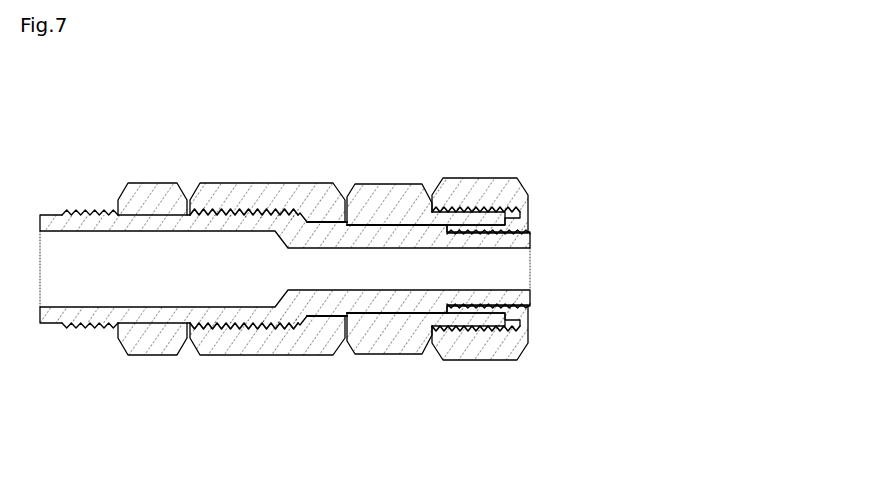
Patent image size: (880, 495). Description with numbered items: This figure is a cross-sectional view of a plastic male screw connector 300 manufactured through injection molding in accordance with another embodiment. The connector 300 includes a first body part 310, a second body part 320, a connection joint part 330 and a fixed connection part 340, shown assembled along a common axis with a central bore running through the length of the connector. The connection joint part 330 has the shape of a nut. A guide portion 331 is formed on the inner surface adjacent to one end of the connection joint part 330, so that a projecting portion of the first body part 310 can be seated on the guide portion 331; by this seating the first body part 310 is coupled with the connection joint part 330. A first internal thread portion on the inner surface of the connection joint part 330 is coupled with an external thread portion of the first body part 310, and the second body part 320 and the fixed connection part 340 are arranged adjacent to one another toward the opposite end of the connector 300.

The plastic male screw connector 300 is at (590, 187).
The first body part 310 is at (149, 367).
The second body part 320 is at (394, 369).
The connection joint part 330 is at (266, 367).
The guide portion 331 is at (302, 202).
The fixed connection part 340 is at (481, 371).